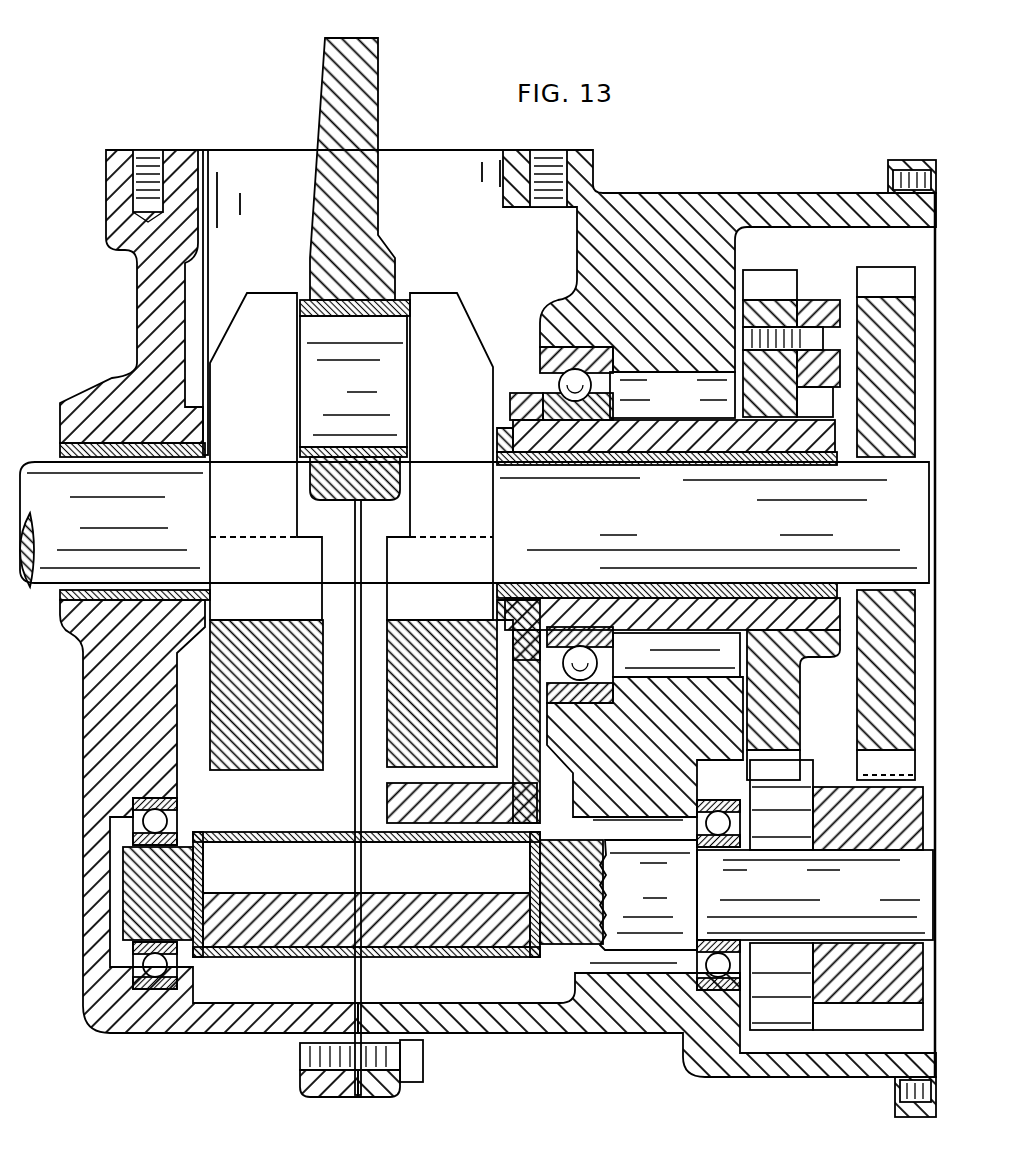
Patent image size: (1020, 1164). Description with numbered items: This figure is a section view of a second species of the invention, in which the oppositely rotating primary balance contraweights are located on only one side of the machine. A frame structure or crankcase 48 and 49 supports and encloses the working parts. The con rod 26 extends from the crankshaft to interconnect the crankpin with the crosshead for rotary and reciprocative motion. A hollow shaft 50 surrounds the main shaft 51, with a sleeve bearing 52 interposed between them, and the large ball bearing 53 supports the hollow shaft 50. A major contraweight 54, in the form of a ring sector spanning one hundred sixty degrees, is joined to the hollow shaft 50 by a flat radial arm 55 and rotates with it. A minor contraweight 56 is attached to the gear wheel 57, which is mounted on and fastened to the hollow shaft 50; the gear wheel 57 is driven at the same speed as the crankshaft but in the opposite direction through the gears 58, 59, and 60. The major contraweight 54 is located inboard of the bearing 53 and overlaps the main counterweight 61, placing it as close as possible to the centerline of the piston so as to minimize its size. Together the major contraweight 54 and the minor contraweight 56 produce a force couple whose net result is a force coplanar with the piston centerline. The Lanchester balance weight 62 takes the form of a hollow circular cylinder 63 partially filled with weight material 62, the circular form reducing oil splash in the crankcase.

The con rod 26 is at (358, 118).
The crankcase 48 is at (538, 1022).
The crankcase 49 is at (250, 1018).
The hollow shaft 50 is at (672, 433).
The main shaft 51 is at (474, 524).
The sleeve bearing 52 is at (640, 462).
The large ball bearing 53 is at (540, 340).
The major contraweight 54 is at (385, 798).
The flat radial arm 55 is at (527, 720).
The minor contraweight 56 is at (822, 325).
The gear wheel 57 is at (768, 285).
The gear 58 is at (878, 712).
The gear 59 is at (865, 828).
The gear 60 is at (772, 828).
The main counterweight 61 is at (442, 693).
The Lanchester balance weight 62 is at (323, 905).
The hollow circular cylinder 63 is at (470, 843).